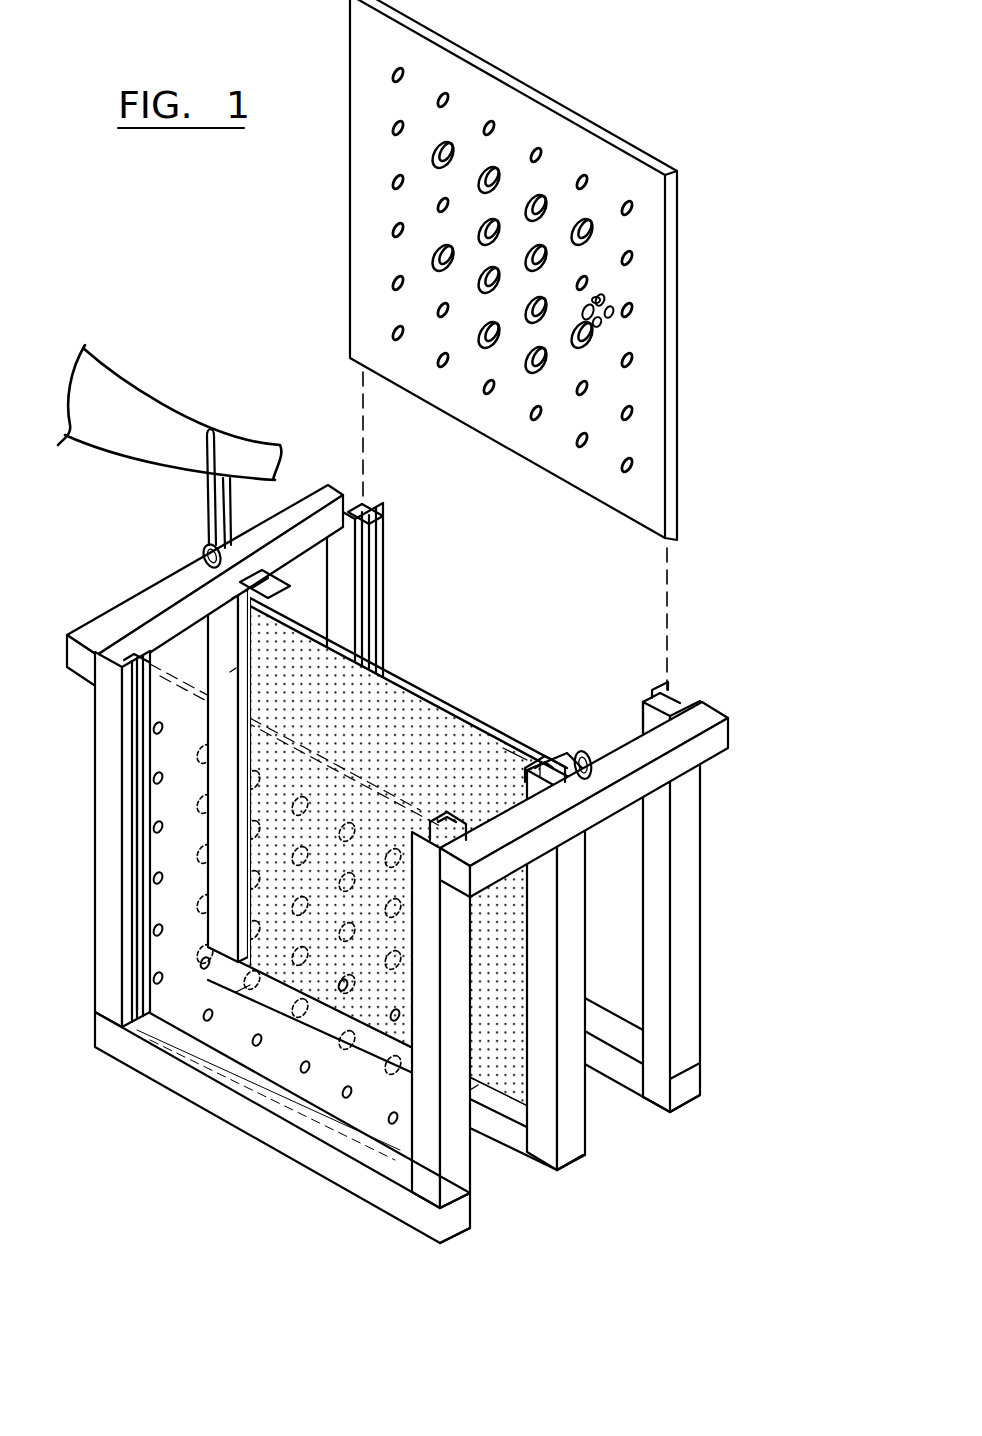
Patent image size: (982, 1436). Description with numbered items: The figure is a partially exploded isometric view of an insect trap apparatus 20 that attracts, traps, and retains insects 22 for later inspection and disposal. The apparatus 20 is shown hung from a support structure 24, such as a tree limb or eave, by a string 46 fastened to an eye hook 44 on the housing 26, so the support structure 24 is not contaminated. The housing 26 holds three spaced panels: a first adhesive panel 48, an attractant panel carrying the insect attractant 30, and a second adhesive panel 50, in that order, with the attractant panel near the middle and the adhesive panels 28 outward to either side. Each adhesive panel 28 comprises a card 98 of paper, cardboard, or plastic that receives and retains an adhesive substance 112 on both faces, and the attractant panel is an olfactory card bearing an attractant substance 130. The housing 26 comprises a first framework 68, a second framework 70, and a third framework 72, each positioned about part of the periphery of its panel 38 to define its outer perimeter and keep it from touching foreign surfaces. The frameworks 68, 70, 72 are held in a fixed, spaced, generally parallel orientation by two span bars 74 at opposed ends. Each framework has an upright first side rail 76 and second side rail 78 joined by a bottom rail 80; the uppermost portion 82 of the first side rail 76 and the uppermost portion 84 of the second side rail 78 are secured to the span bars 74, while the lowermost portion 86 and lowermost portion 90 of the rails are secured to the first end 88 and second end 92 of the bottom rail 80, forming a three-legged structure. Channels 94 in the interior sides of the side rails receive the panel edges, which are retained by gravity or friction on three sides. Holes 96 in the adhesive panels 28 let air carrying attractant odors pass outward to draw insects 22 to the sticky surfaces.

The apparatus 20 is at (94, 600).
The insects 22 is at (602, 326).
The support structure 24 is at (118, 372).
The housing 26 is at (162, 592).
The adhesive panel 28 is at (655, 423).
The insect attractant 30 is at (388, 678).
The panel 38 is at (512, 934).
The eye hook 44 is at (205, 552).
The string 46 is at (207, 490).
The first adhesive panel 48 is at (182, 1050).
The second adhesive panel 50 is at (676, 372).
The first framework 68 is at (100, 860).
The second framework 70 is at (236, 668).
The third framework 72 is at (392, 590).
The span bar 74 is at (737, 790).
The first side rail 76 is at (386, 608).
The second side rail 78 is at (568, 967).
The bottom rail 80 is at (236, 1117).
The uppermost portion of first side rail 82 is at (208, 597).
The uppermost portion of second side rail 84 is at (702, 703).
The lowermost portion of first side rail 86 is at (100, 996).
The first end of bottom rail 88 is at (101, 1047).
The lowermost portion of second side rail 90 is at (444, 1232).
The second end of bottom rail 92 is at (470, 1220).
The channel 94 is at (235, 560).
The holes 96 is at (584, 180).
The card 98 is at (668, 192).
The adhesive substance 112 is at (137, 720).
The attractant substance 130 is at (524, 766).